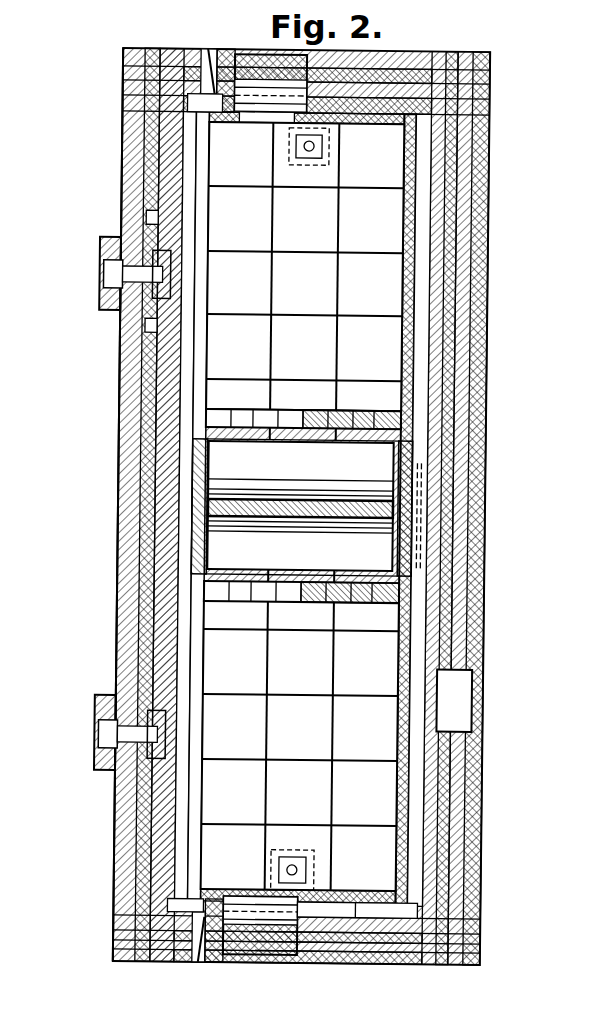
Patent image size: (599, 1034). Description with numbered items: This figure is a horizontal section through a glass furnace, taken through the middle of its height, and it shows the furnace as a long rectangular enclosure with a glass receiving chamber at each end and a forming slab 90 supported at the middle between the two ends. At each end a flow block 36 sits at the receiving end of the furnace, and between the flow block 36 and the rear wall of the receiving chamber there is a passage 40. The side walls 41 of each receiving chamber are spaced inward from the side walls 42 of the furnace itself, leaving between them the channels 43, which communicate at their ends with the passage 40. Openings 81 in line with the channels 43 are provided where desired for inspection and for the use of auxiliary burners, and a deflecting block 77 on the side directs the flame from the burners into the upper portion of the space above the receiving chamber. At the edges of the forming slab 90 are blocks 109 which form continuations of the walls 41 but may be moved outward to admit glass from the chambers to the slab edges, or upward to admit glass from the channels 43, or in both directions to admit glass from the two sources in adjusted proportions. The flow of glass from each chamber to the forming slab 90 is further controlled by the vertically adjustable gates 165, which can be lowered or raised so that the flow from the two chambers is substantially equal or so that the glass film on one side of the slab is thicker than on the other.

The openings 81 is at (190, 52).
The flow block 36 is at (250, 98).
The side walls of the furnace 42 is at (143, 165).
The channels 43 is at (186, 191).
The deflecting block 77 is at (177, 266).
The side walls of chamber 41 is at (197, 278).
The gates 165 is at (321, 418).
The blocks 109 is at (207, 496).
The forming slab 90 is at (300, 503).
The passage 40 is at (194, 906).